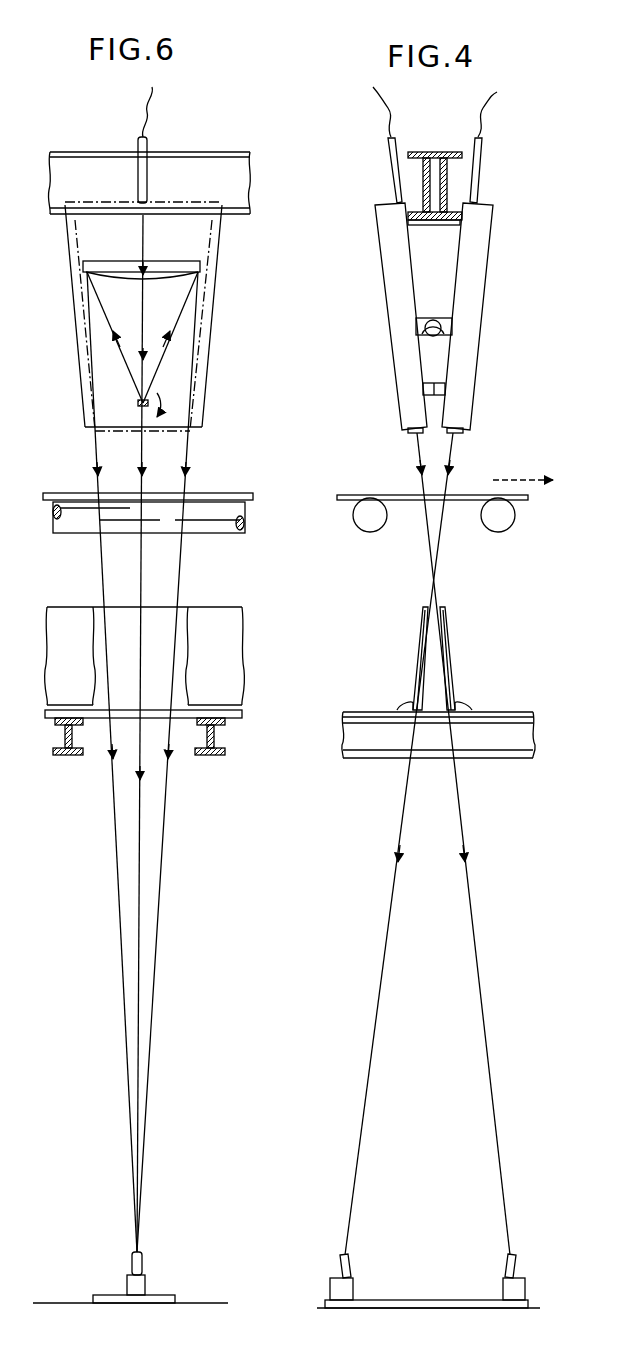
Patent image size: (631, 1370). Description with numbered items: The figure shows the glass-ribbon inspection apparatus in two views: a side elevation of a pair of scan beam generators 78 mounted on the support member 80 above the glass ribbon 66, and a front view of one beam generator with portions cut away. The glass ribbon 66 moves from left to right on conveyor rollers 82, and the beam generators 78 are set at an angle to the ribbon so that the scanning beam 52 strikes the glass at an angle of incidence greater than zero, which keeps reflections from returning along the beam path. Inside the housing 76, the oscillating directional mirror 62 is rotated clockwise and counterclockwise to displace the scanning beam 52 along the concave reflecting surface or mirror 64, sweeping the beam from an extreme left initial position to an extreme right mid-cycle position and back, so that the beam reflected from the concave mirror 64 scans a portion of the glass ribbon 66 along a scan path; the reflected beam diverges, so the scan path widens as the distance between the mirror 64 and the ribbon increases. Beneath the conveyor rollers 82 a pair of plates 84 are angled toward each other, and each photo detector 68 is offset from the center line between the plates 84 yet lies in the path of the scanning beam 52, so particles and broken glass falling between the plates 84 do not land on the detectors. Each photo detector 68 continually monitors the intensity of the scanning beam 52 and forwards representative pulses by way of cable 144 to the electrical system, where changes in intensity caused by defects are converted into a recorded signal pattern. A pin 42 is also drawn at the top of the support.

In FIG. 6, the pin / mounting rod 42 is at (132, 143).
In FIG. 4, the pin / mounting rod 42 is at (382, 140).
In FIG. 6, the scanning beam 52 is at (100, 297).
In FIG. 4, the scanning beam 52 is at (415, 449).
In FIG. 6, the oscillating directional mirror 62 is at (137, 405).
In FIG. 6, the concave reflecting surface 64 is at (125, 270).
In FIG. 6, the glass ribbon 66 is at (68, 493).
In FIG. 4, the glass ribbon 66 is at (383, 495).
In FIG. 6, the photo detector 68 is at (132, 1260).
In FIG. 4, the photo detector 68 is at (340, 1262).
In FIG. 6, the housing 76 is at (217, 260).
In FIG. 4, the housing 76 is at (490, 272).
In FIG. 6, the scan beam generator 78 is at (88, 190).
In FIG. 4, the scan beam generator 78 is at (378, 193).
In FIG. 6, the support member 80 is at (185, 142).
In FIG. 4, the support member 80 is at (420, 135).
In FIG. 6, the conveyor roller 82 is at (55, 517).
In FIG. 4, the conveyor roller 82 is at (372, 527).
In FIG. 6, the plate 84 is at (200, 617).
In FIG. 4, the plate 84 is at (417, 658).
In FIG. 6, the cable 144 is at (143, 1287).
In FIG. 4, the cable 144 is at (332, 1290).